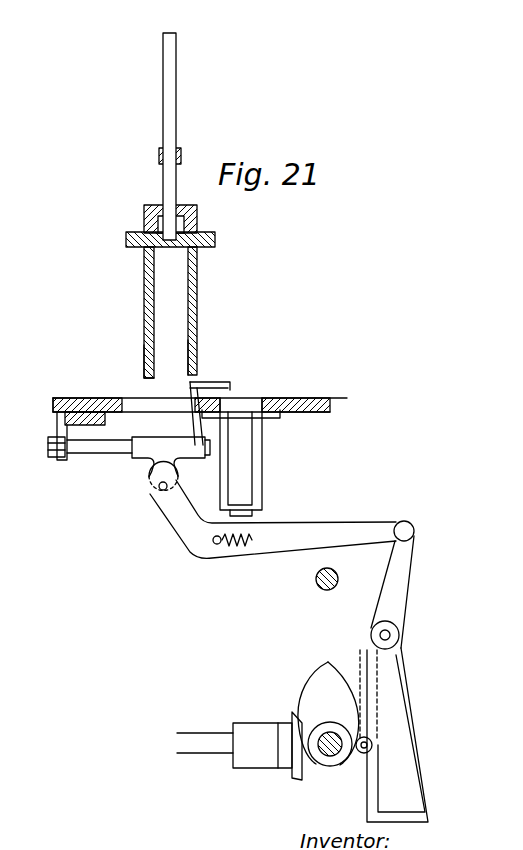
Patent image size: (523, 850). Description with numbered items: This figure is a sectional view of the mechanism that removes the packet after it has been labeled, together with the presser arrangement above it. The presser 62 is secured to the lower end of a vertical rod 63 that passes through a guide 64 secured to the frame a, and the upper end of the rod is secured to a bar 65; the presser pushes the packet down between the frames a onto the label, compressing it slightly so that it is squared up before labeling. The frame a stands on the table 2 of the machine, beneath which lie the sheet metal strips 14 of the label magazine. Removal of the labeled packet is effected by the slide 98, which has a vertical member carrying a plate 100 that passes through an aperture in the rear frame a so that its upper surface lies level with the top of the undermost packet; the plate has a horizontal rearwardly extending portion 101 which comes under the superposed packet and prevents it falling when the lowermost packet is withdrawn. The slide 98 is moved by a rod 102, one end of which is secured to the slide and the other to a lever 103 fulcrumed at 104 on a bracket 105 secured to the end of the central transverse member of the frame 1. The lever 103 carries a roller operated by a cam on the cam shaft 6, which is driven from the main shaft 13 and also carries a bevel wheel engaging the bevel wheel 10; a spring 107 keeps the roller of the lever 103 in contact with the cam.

The vertical rod 63 is at (163, 87).
The bar 65 is at (158, 157).
The guide 64 is at (207, 199).
The presser 62 is at (146, 238).
The frame a is at (143, 299).
The table 2 is at (97, 402).
The frame 1 is at (57, 420).
The horizontal rearwardly extending portion 101 is at (97, 449).
The plate 100 is at (188, 423).
The slide 98 is at (171, 464).
The sheet metal strips 14 is at (241, 457).
The rod 102 is at (173, 515).
The spring 107 is at (250, 531).
The main shaft 13 is at (309, 581).
The lever 103 is at (395, 614).
The fulcrum 104 is at (380, 635).
The bracket 105 is at (397, 735).
The cam shaft 6 is at (333, 756).
The bevel wheel 10 is at (300, 765).